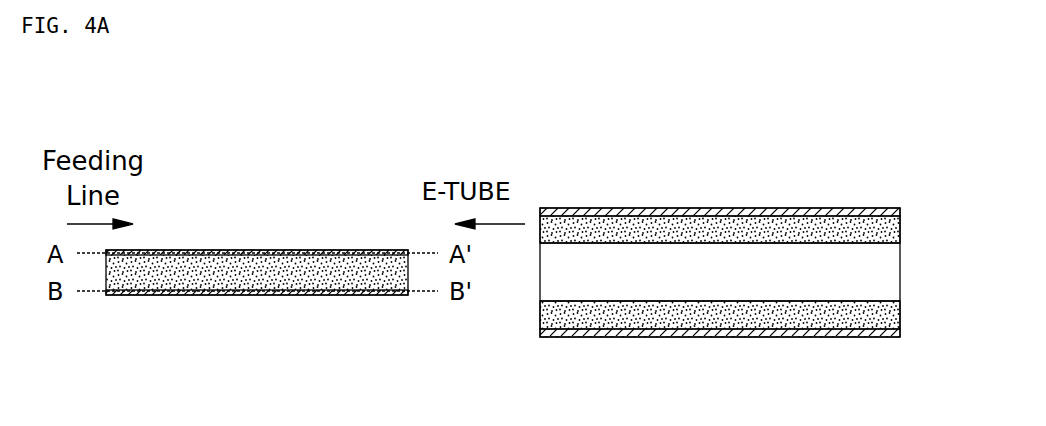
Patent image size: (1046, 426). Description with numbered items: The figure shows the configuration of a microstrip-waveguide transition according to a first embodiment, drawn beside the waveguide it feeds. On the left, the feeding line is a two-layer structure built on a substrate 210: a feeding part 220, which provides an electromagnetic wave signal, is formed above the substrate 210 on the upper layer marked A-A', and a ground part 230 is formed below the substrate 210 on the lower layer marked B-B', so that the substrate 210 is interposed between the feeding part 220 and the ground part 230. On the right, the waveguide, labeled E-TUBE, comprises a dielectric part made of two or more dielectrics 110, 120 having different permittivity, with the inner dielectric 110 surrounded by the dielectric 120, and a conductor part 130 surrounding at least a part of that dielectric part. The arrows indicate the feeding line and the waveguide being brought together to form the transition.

The dielectric 110 is at (795, 275).
The dielectric 120 is at (695, 230).
The conductor part 130 is at (613, 212).
The substrate 210 is at (312, 273).
The feeding part 220 is at (230, 248).
The ground part 230 is at (168, 298).